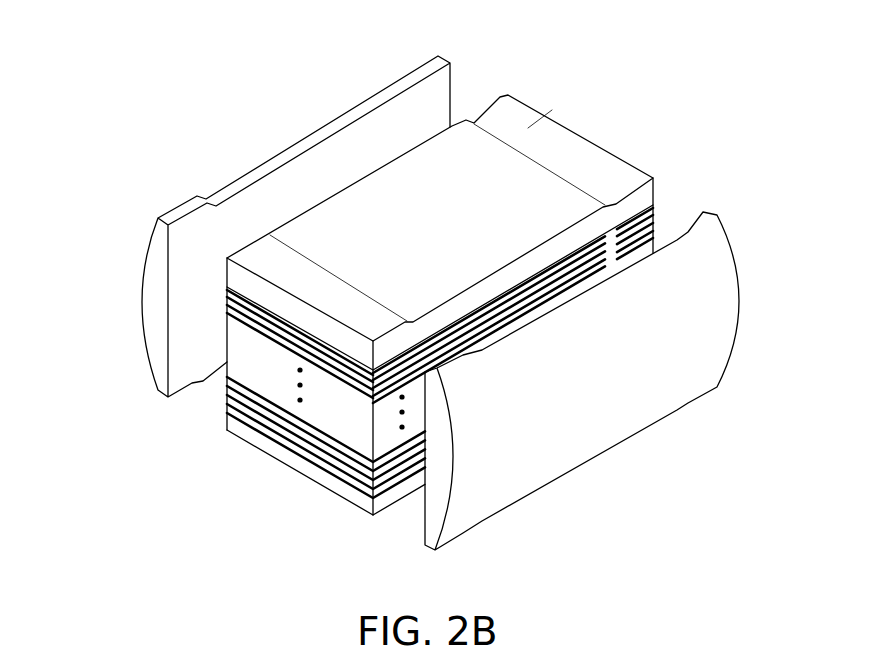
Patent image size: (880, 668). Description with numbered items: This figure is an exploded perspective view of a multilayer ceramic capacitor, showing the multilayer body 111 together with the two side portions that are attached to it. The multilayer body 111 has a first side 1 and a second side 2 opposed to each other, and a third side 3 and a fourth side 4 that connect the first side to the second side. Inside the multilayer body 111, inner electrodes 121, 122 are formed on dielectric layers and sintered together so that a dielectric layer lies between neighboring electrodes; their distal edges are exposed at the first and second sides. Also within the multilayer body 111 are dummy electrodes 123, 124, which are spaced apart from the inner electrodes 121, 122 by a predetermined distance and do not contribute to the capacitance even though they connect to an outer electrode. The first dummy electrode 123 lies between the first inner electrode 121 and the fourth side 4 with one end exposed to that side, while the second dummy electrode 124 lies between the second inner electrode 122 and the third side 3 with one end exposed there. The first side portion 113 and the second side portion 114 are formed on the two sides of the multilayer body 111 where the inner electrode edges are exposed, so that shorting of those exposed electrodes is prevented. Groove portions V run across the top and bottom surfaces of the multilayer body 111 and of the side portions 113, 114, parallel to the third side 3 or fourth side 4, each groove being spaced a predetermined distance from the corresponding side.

The first side 1 is at (242, 130).
The second side 2 is at (617, 472).
The third side 3 is at (271, 483).
The fourth side 4 is at (607, 119).
The multilayer body 111 is at (552, 120).
The first side portion 113 is at (157, 305).
The second side portion 114 is at (705, 323).
The first inner electrode 121 is at (332, 474).
The second inner electrode 122 is at (648, 228).
The first dummy electrode 123 is at (638, 214).
The second dummy electrode 124 is at (360, 486).
The groove portion V is at (173, 177).